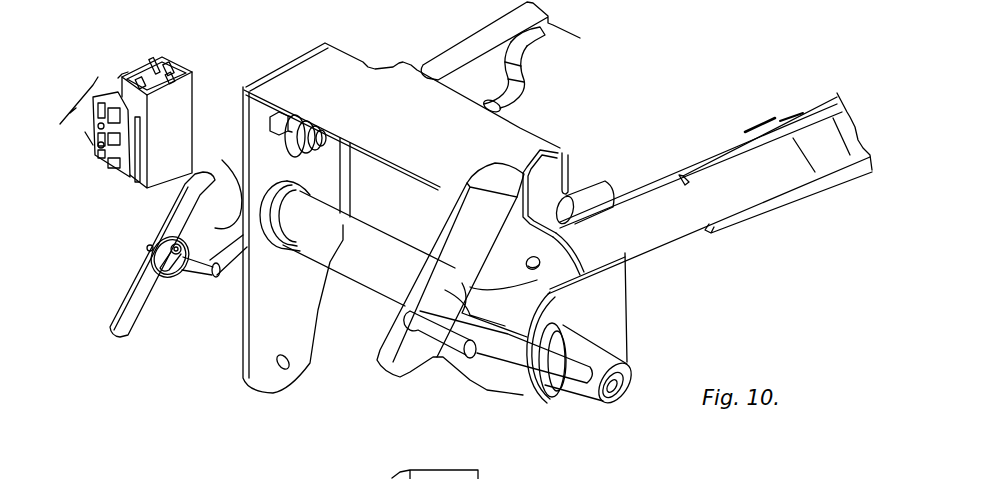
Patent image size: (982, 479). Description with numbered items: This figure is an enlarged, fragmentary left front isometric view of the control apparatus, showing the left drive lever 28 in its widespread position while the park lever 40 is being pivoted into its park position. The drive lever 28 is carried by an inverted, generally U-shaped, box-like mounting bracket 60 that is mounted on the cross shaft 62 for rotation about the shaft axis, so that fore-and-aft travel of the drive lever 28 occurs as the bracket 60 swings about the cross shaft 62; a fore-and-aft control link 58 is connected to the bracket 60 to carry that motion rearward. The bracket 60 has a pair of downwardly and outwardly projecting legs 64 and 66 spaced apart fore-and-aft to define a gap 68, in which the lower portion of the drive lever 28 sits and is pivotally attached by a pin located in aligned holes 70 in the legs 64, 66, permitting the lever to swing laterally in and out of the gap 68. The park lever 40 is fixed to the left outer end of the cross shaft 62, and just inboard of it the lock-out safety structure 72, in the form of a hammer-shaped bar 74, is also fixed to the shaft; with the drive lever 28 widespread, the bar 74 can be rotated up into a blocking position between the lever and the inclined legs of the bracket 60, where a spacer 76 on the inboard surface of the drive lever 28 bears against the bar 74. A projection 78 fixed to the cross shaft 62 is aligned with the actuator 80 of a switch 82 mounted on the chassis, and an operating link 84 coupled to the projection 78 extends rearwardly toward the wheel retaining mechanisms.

The drive lever 28 is at (770, 158).
The park lever 40 is at (497, 345).
The control link 58 is at (472, 47).
The mounting bracket 60 is at (526, 117).
The cross shaft 62 is at (392, 278).
The leg 64 is at (510, 258).
The leg 66 is at (570, 152).
The gap 68 is at (553, 178).
The hole 70 is at (541, 266).
The lock-out safety structure 72 is at (391, 379).
The bar 74 is at (460, 230).
The spacer 76 is at (597, 197).
The projection 78 is at (133, 338).
The actuator 80 is at (163, 185).
The switch 82 is at (188, 80).
The operating link 84 is at (525, 47).